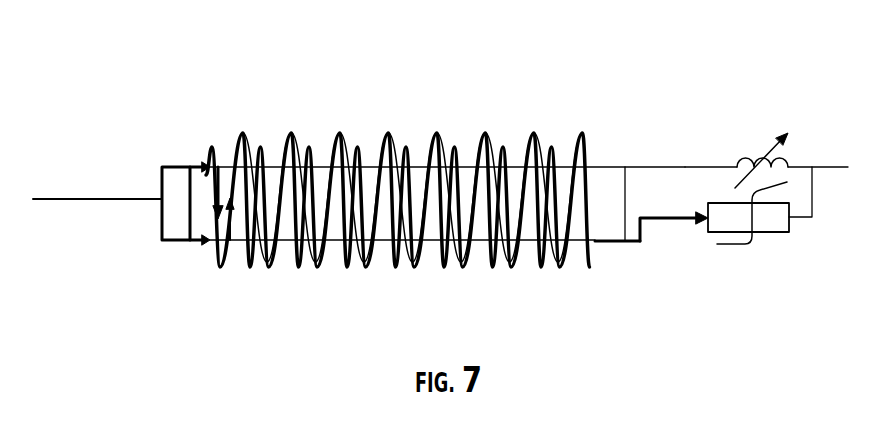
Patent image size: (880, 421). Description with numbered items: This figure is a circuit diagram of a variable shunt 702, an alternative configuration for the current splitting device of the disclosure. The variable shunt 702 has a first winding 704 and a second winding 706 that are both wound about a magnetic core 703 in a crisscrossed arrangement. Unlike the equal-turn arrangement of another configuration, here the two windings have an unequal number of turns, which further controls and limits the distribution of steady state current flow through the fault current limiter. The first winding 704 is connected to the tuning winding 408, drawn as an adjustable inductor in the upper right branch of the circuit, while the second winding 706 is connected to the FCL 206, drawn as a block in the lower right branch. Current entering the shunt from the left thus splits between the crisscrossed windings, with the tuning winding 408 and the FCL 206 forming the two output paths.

The variable shunt 702 is at (526, 104).
The magnetic core 703 is at (272, 166).
The first winding 704 is at (175, 243).
The second winding 706 is at (172, 166).
The tuning winding 408 is at (787, 150).
The FCL 206 is at (765, 233).